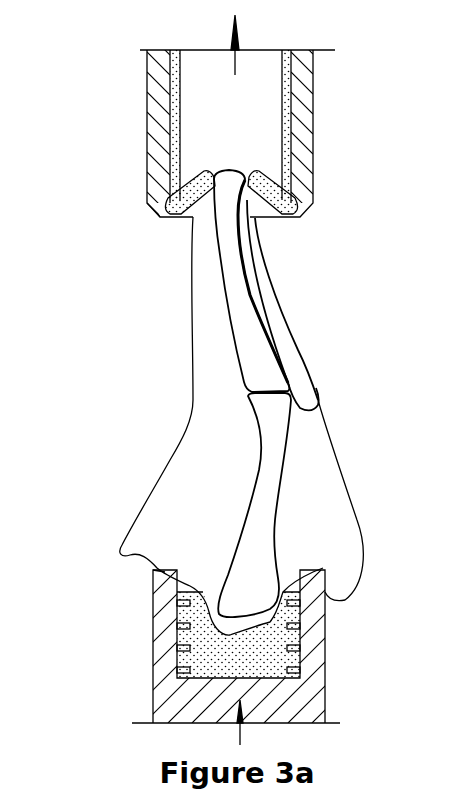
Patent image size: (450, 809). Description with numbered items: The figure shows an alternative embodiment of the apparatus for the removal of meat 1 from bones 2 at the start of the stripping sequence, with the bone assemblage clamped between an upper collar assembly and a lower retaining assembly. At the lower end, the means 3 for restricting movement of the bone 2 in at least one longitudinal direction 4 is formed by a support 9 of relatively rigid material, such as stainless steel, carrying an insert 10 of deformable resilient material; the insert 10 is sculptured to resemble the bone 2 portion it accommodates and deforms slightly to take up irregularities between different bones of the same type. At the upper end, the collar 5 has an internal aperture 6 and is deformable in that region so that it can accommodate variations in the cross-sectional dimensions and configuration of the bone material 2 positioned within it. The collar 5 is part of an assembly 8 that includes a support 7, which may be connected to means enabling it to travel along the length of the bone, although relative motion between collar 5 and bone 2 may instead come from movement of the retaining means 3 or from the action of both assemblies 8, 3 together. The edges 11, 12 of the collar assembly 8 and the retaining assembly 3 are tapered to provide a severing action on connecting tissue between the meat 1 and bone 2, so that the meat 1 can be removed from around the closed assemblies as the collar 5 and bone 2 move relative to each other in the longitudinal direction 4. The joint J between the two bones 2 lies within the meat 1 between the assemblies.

The meat 1 is at (338, 520).
The bones 2 is at (245, 327).
The joint J is at (310, 398).
The means for restricting movement of a bone 3 is at (352, 668).
The longitudinal direction 4 is at (70, 533).
The collar 5 is at (288, 188).
The internal aperture 6 is at (230, 166).
The support 7 is at (308, 142).
The collar assembly 8 is at (138, 145).
The support 9 is at (178, 706).
The insert 10 is at (177, 658).
The edge 11 is at (157, 215).
The edge 12 is at (158, 592).